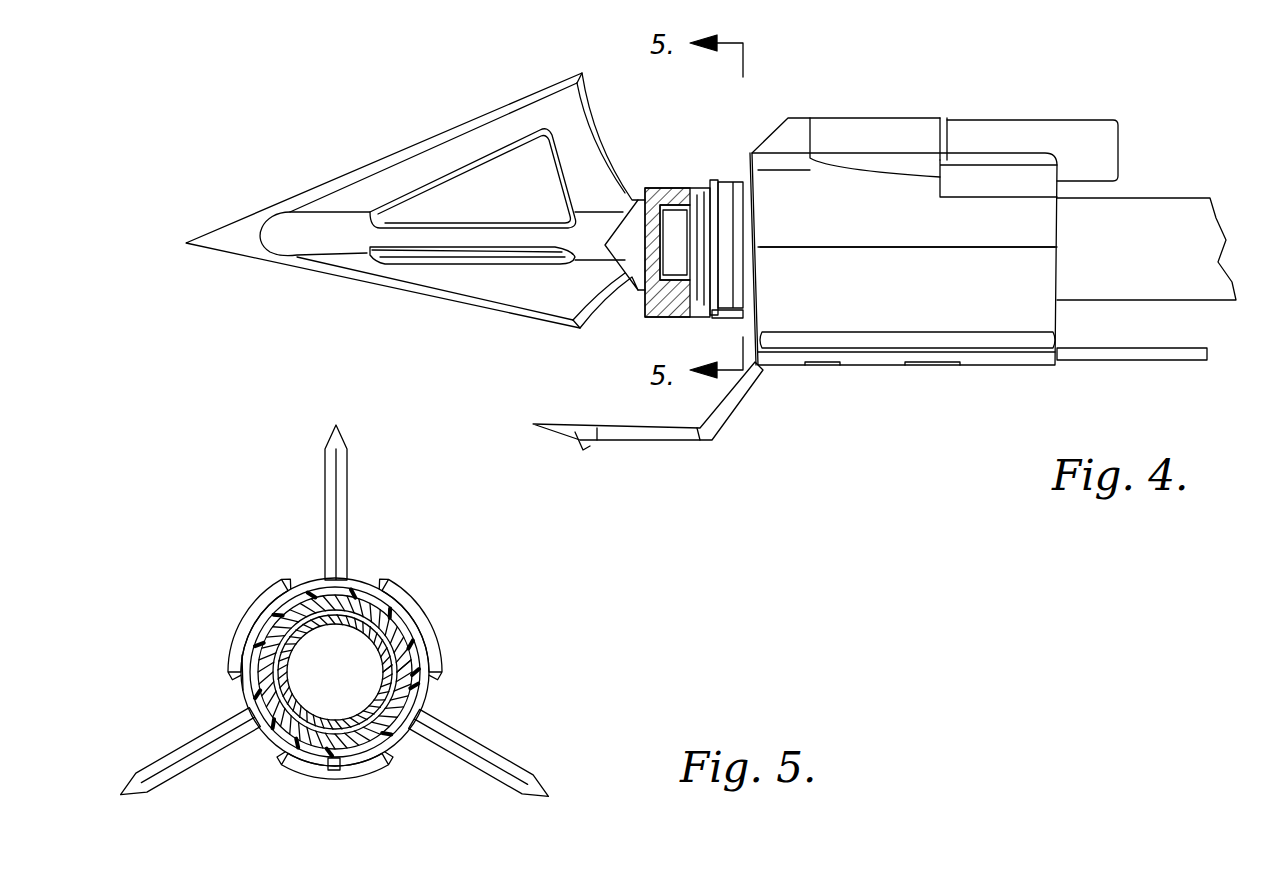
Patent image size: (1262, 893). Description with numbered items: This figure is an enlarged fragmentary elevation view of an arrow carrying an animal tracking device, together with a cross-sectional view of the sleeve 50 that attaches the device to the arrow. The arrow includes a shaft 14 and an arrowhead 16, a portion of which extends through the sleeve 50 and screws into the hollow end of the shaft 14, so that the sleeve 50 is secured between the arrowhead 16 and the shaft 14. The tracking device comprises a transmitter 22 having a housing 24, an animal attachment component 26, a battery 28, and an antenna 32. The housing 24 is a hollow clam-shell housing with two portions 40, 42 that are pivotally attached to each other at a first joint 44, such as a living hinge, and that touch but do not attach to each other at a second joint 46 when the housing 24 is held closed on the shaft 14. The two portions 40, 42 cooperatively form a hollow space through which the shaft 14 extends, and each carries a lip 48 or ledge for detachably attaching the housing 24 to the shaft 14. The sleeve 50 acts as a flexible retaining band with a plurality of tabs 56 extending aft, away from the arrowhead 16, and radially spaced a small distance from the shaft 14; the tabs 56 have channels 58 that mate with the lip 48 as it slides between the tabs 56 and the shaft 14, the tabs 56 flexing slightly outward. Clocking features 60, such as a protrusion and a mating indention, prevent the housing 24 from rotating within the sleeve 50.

In FIG. 4, the shaft 14 is at (1190, 205).
In FIG. 4, the arrowhead 16 is at (352, 275).
In FIG. 5, the arrowhead 16 is at (520, 782).
In FIG. 4, the transmitter 22 is at (860, 400).
In FIG. 4, the housing 24 is at (783, 136).
In FIG. 4, the animal attachment component 26 is at (650, 438).
In FIG. 4, the battery 28 is at (1090, 130).
In FIG. 4, the antenna 32 is at (1150, 355).
In FIG. 4, the housing portion 40 is at (1045, 305).
In FIG. 4, the housing portion 42 is at (1045, 222).
In FIG. 5, the first joint 44 is at (244, 672).
In FIG. 4, the second joint 46 is at (842, 248).
In FIG. 5, the second joint 46 is at (418, 680).
In FIG. 4, the lip 48 is at (745, 205).
In FIG. 4, the sleeve 50 is at (655, 188).
In FIG. 5, the sleeve 50 is at (395, 585).
In FIG. 5, the tabs 56 is at (262, 598).
In FIG. 4, the channels 58 is at (710, 320).
In FIG. 5, the clocking features 60 is at (333, 772).